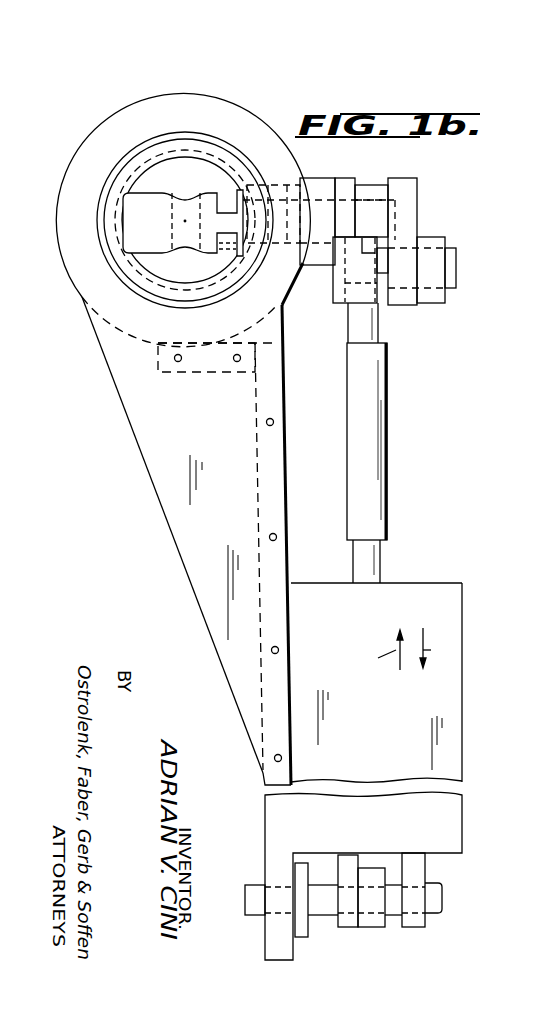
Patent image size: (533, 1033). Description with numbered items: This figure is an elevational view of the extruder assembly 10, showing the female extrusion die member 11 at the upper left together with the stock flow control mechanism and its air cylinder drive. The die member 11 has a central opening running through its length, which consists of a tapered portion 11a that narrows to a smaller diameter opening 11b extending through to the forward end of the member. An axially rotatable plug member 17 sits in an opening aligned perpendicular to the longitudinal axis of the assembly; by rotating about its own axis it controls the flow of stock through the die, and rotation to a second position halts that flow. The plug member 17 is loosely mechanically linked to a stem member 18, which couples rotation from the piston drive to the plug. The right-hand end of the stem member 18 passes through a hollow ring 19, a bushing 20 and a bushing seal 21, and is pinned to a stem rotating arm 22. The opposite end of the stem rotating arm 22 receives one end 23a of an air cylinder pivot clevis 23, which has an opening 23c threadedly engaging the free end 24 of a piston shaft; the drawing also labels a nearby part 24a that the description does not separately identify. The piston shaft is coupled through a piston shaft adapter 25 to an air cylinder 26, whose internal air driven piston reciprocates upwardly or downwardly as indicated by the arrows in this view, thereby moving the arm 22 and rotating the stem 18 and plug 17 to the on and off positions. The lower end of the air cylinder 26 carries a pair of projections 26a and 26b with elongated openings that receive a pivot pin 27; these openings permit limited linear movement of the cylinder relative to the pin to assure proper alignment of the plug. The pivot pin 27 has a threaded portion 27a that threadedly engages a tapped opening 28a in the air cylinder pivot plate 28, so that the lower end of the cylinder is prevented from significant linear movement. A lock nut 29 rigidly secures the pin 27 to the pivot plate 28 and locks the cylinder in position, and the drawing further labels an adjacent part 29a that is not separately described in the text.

The extruder assembly 10 is at (461, 413).
The female extrusion die member 11 is at (90, 132).
The tapered portion 11a is at (283, 190).
The smaller diameter opening 11b is at (203, 157).
The plug member 17 is at (157, 238).
The stem member 18 is at (223, 200).
The hollow ring 19 is at (268, 275).
The bushing 20 is at (315, 190).
The bushing seal 21 is at (350, 182).
The stem rotating arm 22 is at (403, 195).
The air cylinder pivot clevis 23 is at (340, 307).
The clevis end 23a is at (458, 273).
The clevis opening 23c is at (350, 277).
The piston shaft free end 24 is at (378, 330).
The pivot pin 24a is at (378, 273).
The piston shaft adapter 25 is at (387, 485).
The air cylinder 26 is at (462, 713).
The projection 26a is at (352, 862).
The projection 26b is at (427, 870).
The pivot pin 27 is at (253, 885).
The threaded portion 27a is at (253, 917).
The air cylinder pivot plate 28 is at (272, 827).
The tapped opening 28a is at (277, 883).
The lock nut 29 is at (303, 937).
The spacer 29a is at (373, 927).